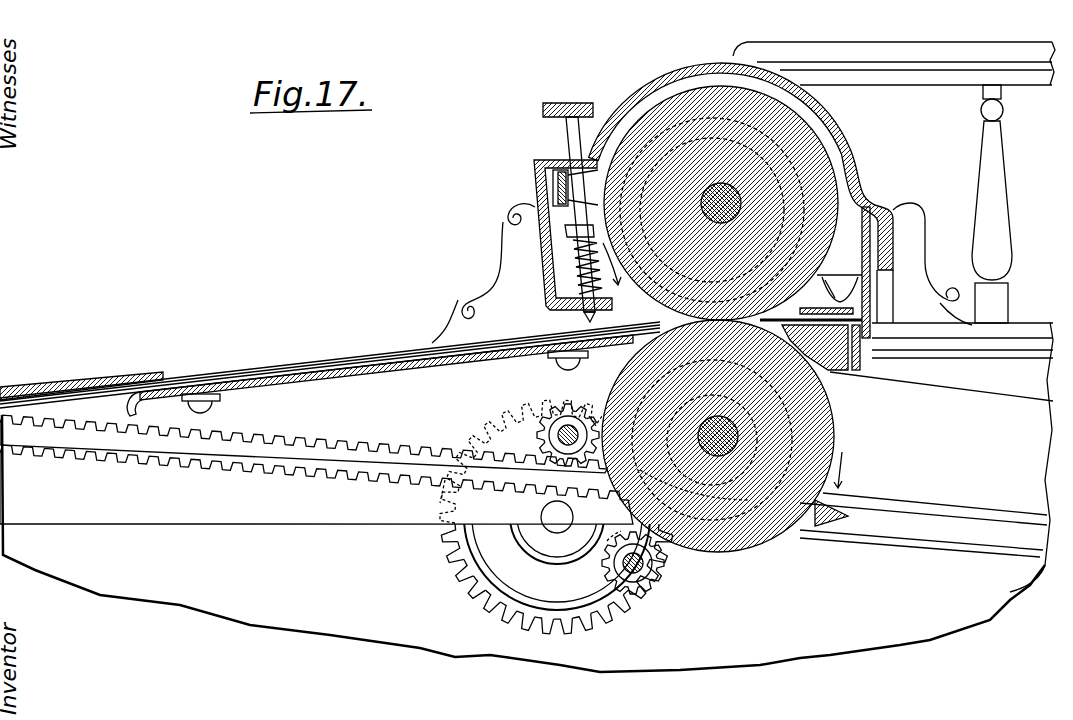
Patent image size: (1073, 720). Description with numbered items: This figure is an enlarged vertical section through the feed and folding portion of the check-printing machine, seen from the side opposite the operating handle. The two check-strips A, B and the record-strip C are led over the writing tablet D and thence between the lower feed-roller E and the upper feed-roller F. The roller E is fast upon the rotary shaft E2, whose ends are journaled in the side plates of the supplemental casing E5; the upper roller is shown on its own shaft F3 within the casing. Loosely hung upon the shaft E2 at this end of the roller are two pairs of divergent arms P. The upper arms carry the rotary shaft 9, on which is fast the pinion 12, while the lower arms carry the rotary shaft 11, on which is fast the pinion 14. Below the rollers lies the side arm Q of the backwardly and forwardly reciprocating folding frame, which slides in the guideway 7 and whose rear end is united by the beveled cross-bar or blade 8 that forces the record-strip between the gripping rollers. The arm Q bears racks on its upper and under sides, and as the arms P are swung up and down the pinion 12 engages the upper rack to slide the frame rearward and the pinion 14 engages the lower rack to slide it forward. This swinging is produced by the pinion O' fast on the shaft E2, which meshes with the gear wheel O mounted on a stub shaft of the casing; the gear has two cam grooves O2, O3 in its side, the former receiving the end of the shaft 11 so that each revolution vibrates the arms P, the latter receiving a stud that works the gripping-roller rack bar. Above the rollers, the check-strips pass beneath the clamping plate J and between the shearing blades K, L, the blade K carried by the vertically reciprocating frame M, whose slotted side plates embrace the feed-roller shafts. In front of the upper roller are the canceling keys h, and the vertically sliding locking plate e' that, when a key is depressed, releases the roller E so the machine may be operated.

The check-strip A is at (203, 372).
The check-strip B is at (233, 373).
The record-strip C is at (264, 373).
The writing tablet D is at (380, 375).
The side arm of reciprocating frame Q is at (317, 492).
The rotary shaft 9 is at (556, 437).
The pinion 12 is at (541, 414).
The divergent arm P is at (589, 416).
The gear wheel O is at (548, 516).
The cam groove O2 is at (546, 518).
The cam groove O3 is at (557, 530).
The rotary shaft 11 is at (643, 594).
The pinion 14 is at (650, 583).
The pinion O' is at (750, 448).
The feed-roller E is at (737, 436).
The rotary shaft E2 is at (718, 436).
The guideway 7 is at (904, 506).
The cross-bar or blade 8 is at (832, 524).
The feed-roller F is at (848, 156).
The supplemental casing E5 is at (880, 197).
The upper roller shaft F3 is at (721, 203).
The canceling key h is at (566, 133).
The vertically reciprocating frame M is at (640, 314).
The vertically sliding plate e' is at (575, 188).
The clamping plate J is at (831, 287).
The shearing blade K is at (876, 292).
The shearing blade L is at (862, 367).